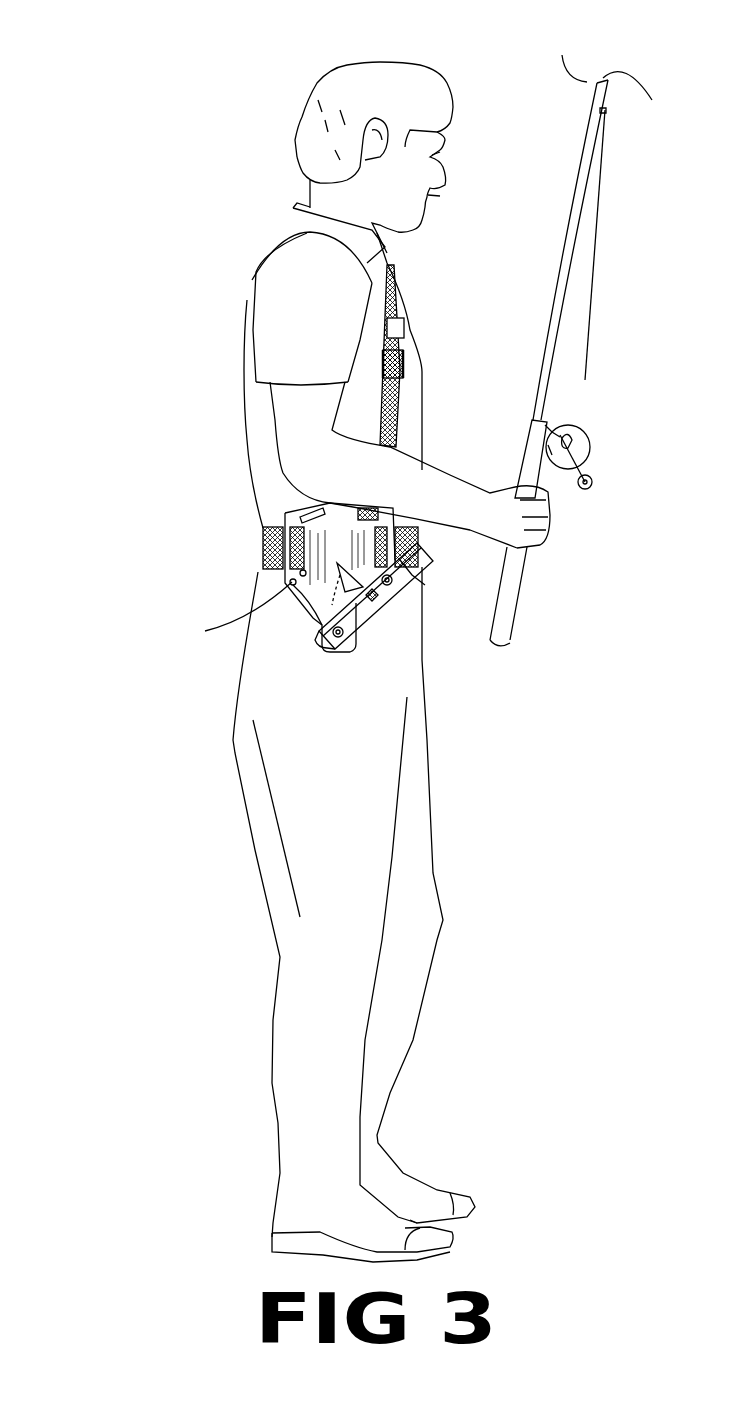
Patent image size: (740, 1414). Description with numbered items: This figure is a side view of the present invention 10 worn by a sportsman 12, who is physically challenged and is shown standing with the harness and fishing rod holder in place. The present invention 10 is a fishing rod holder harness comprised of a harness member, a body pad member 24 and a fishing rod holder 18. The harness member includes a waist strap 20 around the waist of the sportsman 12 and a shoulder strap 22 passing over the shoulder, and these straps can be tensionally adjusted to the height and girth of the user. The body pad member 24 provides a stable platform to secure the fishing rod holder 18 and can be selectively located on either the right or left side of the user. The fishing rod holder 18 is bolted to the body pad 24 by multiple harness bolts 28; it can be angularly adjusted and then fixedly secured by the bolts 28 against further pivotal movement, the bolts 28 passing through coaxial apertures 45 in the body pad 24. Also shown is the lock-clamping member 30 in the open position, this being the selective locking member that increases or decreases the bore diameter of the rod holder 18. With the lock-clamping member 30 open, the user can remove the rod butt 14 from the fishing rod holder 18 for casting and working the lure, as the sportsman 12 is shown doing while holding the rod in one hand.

The present invention 10 is at (288, 653).
The sportsman 12 is at (370, 88).
The rod butt 14 is at (512, 615).
The fishing rod holder 18 is at (412, 575).
The waist strap 20 is at (272, 553).
The shoulder strap 22 is at (393, 408).
The body pad member 24 is at (288, 512).
The harness bolt 28 is at (338, 637).
The lock-clamping member 30 is at (337, 563).
The coaxial apertures 45 is at (293, 582).